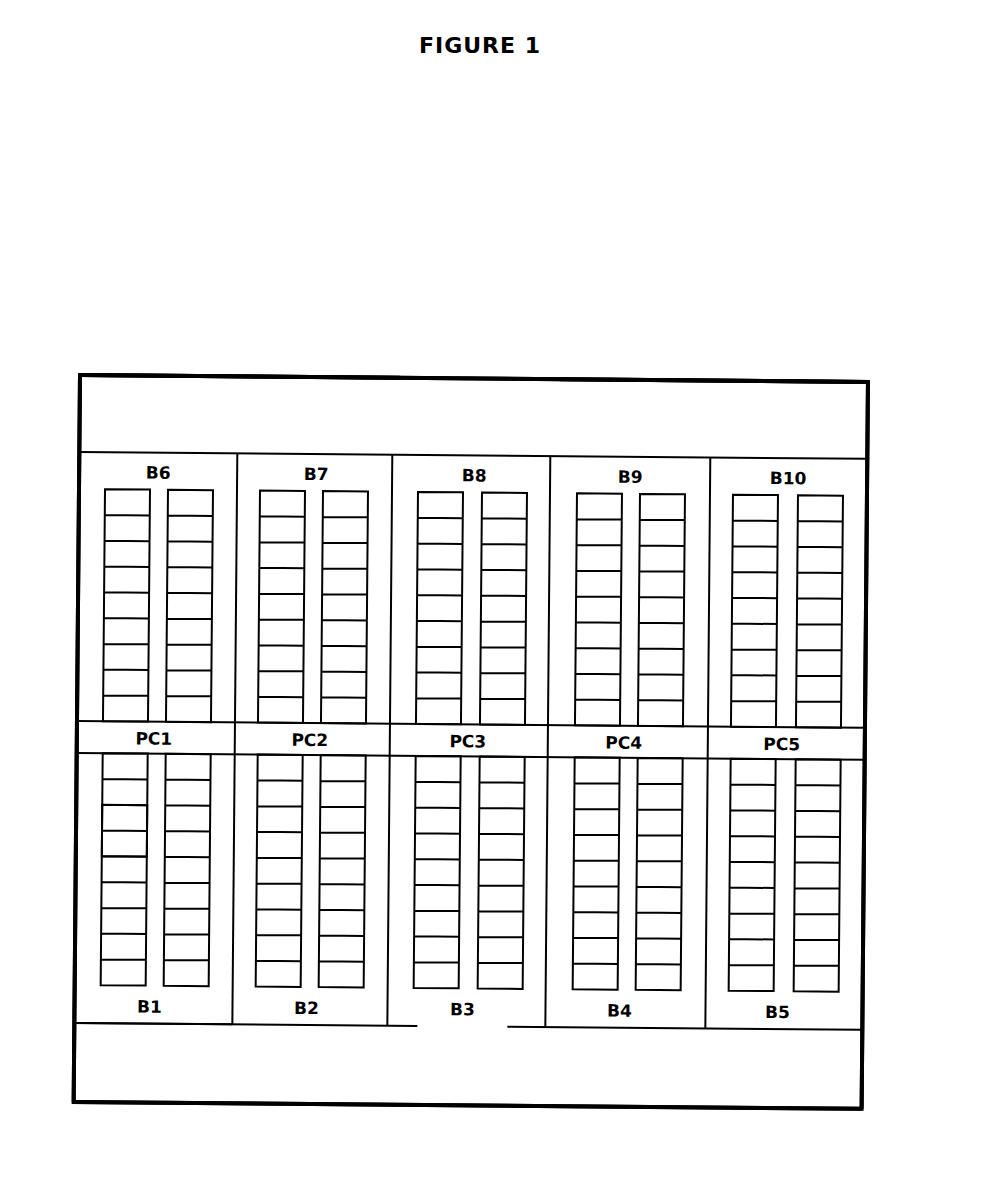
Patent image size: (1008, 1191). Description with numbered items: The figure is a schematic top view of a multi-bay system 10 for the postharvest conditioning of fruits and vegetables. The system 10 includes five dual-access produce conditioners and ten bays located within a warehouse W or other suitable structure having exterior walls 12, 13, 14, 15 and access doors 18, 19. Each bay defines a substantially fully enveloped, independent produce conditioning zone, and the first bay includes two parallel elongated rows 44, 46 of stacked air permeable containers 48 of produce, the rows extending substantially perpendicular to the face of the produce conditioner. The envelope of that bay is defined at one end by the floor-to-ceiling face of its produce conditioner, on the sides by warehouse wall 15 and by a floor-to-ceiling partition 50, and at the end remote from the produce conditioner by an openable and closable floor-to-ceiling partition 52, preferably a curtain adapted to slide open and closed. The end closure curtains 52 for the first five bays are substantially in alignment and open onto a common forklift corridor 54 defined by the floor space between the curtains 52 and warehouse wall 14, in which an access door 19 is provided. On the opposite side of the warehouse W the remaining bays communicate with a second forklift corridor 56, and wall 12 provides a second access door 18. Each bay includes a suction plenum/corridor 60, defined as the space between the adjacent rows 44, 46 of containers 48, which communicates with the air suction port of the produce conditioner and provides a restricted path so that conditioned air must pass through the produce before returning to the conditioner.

The system 10 is at (388, 362).
The warehouse W is at (582, 372).
The access door 18 is at (255, 374).
The exterior wall 12 is at (758, 373).
The warehouse wall 15 is at (80, 617).
The exterior wall 13 is at (869, 888).
The warehouse wall 14 is at (496, 1104).
The access door 19 is at (658, 1103).
The second forklift corridor 56 is at (463, 427).
The forklift corridor 54 is at (462, 1077).
The row of stacked containers 44 is at (112, 987).
The row of stacked containers 46 is at (198, 987).
The air permeable containers 48 is at (131, 845).
The suction plenum/corridor 60 is at (162, 895).
The partition 52 is at (152, 1024).
The partition 50 is at (234, 968).